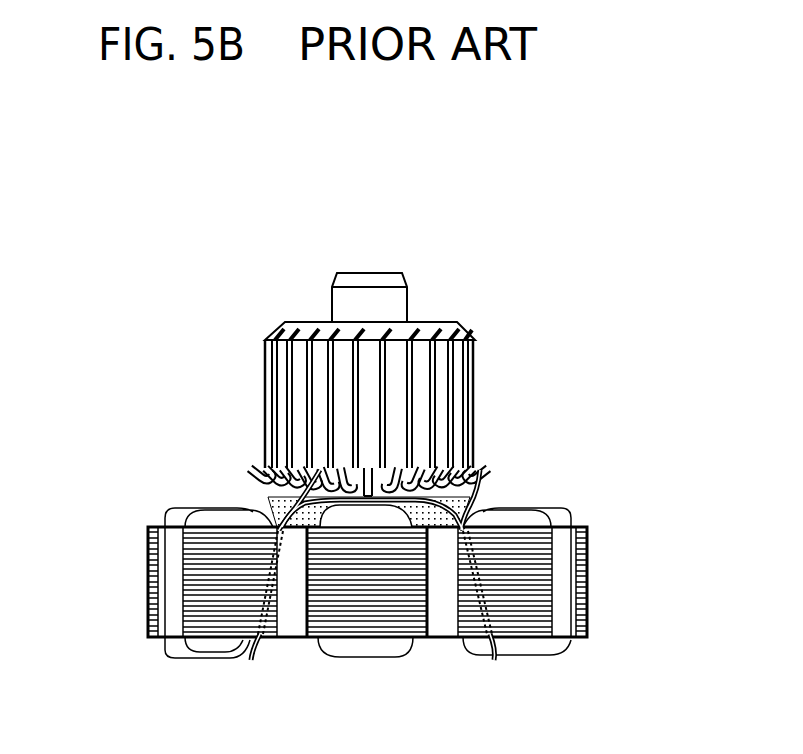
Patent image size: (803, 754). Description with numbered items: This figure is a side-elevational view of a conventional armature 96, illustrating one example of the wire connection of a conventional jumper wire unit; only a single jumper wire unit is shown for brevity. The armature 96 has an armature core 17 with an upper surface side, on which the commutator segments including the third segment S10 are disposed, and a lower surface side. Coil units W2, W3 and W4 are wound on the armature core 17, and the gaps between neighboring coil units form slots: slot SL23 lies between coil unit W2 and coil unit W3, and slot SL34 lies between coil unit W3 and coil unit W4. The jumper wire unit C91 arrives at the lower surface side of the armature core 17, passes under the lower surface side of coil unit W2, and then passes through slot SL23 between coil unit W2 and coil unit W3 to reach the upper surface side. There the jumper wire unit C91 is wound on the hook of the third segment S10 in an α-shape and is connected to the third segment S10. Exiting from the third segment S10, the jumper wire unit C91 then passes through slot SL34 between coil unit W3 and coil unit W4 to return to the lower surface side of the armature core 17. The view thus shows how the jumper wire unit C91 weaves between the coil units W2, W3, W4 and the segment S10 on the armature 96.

The third segment S10 is at (315, 437).
The armature 96 is at (510, 445).
The armature core 17 is at (147, 618).
The coil unit W4 is at (197, 607).
The coil unit W3 is at (347, 648).
The coil unit W2 is at (520, 647).
The slot SL34 is at (288, 628).
The slot SL23 is at (442, 595).
The jumper wire unit C91 is at (290, 532).